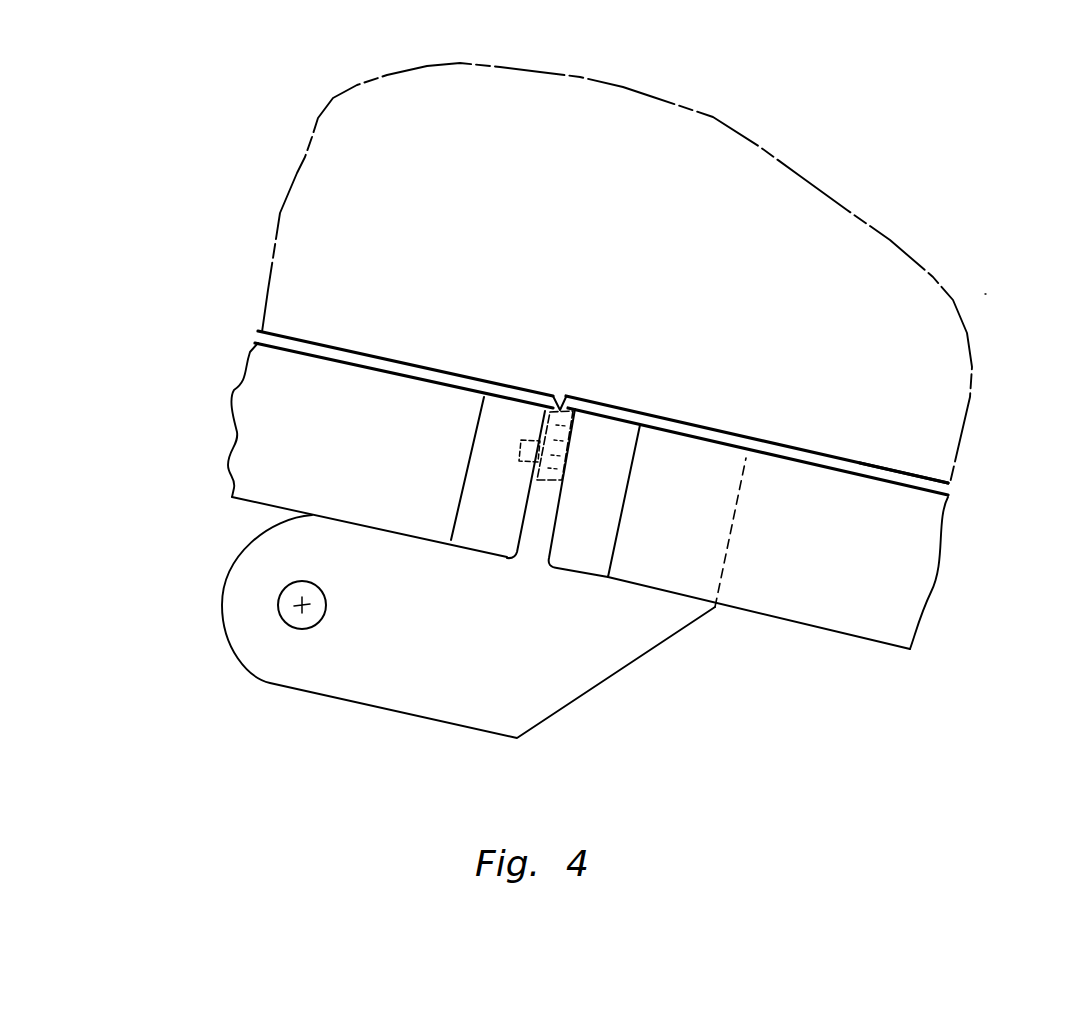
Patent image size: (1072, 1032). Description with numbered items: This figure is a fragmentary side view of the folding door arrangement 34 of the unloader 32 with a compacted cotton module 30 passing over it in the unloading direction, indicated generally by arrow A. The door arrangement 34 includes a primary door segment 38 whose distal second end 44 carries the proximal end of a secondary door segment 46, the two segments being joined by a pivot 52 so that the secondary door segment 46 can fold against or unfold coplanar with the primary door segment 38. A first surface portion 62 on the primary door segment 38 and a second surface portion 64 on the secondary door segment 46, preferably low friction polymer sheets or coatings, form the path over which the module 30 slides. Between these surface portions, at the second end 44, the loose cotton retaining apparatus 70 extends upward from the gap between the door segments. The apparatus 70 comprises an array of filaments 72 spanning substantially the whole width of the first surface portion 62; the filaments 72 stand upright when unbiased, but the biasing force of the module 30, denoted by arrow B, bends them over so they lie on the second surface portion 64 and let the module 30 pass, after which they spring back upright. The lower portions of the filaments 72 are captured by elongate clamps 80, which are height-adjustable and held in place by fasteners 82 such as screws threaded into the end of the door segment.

The cotton module 30 is at (310, 137).
The unloader 32 is at (985, 294).
The folding door arrangement 34 is at (940, 555).
The primary door segment 38 is at (227, 464).
The second end 44 is at (531, 513).
The secondary door segment 46 is at (860, 643).
The pivot 52 is at (327, 605).
The first surface portion 62 is at (320, 343).
The second surface portion 64 is at (903, 471).
The loose cotton retaining apparatus 70 is at (757, 413).
The filaments 72 is at (640, 399).
The elongate clamps 80 is at (540, 480).
The fasteners 82 is at (557, 457).
The direction A is at (680, 205).
The arrow B is at (556, 388).